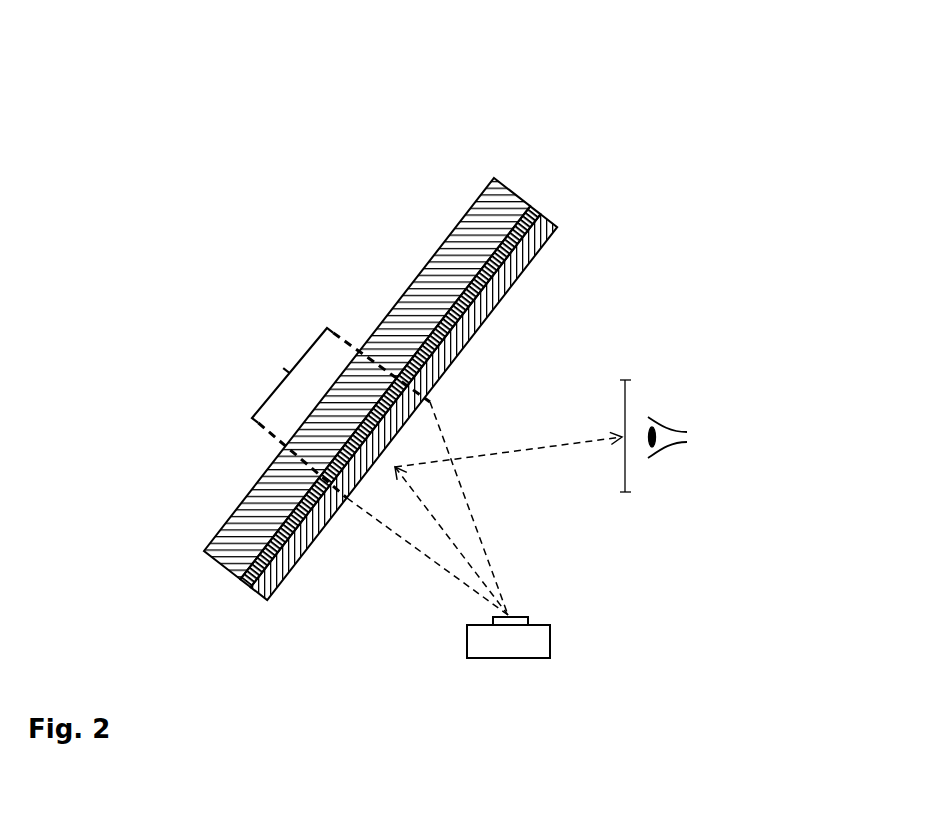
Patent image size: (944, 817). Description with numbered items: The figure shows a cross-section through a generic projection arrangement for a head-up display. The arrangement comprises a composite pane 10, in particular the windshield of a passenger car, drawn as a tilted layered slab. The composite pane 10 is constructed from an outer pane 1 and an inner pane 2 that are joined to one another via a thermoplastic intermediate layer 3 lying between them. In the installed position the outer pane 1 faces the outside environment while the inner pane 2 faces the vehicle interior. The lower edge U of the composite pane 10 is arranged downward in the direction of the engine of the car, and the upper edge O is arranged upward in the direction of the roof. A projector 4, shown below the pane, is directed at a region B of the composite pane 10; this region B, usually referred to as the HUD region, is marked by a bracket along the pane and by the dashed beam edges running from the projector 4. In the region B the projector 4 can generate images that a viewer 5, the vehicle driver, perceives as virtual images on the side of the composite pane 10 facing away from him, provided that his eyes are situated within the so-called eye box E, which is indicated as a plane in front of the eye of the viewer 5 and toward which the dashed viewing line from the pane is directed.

The composite pane 10 is at (414, 335).
The outer pane 1 is at (443, 253).
The inner pane 2 is at (553, 231).
The thermoplastic intermediate layer 3 is at (532, 208).
The projector 4 is at (532, 645).
The viewer 5 is at (685, 415).
The upper edge O is at (527, 160).
The lower edge U is at (238, 607).
The eye box E is at (640, 397).
The region B is at (340, 413).